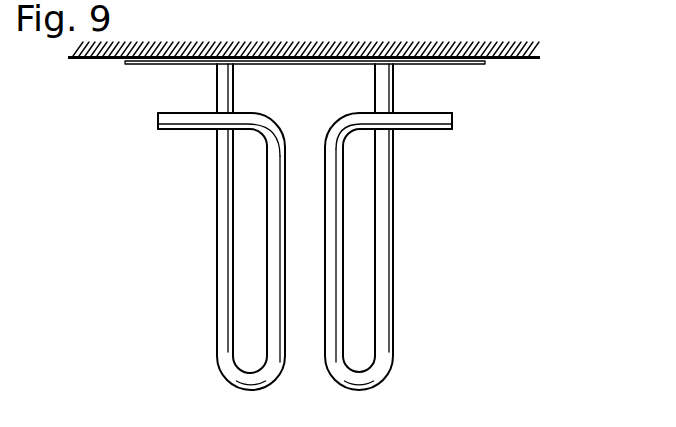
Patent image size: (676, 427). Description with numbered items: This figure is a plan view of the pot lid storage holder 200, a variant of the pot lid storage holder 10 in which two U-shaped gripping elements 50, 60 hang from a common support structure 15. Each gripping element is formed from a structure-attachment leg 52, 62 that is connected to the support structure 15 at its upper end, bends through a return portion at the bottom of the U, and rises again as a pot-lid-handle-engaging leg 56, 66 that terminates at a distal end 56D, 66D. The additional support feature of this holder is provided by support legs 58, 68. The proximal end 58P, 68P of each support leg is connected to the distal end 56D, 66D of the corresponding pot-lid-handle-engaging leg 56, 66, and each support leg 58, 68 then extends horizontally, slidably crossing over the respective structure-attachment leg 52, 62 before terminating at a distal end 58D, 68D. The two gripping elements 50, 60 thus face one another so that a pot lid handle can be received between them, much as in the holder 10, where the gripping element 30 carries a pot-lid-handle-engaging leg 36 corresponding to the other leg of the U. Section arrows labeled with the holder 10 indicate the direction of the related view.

The pot lid storage holder 200 is at (552, 61).
The support structure 15 is at (425, 66).
The gripping element 50 is at (201, 227).
The structure-attachment leg 52 is at (224, 217).
The pot-lid-handle-engaging leg 56 is at (278, 232).
The distal end of pot-lid-handle-engaging leg 56D is at (276, 143).
The support leg 58 is at (194, 114).
The distal end of support leg 58D is at (158, 122).
The proximal end of support leg 58P is at (267, 120).
The gripping element 60 is at (409, 227).
The structure-attachment leg 62 is at (396, 240).
The pot-lid-handle-engaging leg 66 is at (329, 236).
The distal end of pot-lid-handle-engaging leg 66D is at (332, 142).
The support leg 68 is at (416, 115).
The distal end of support leg 68D is at (452, 122).
The proximal end of support leg 68P is at (338, 127).
The gripping element 30 is at (479, 191).
The pot-lid-handle-engaging leg 36 is at (354, 247).
The pot lid storage holder 10 is at (112, 393).